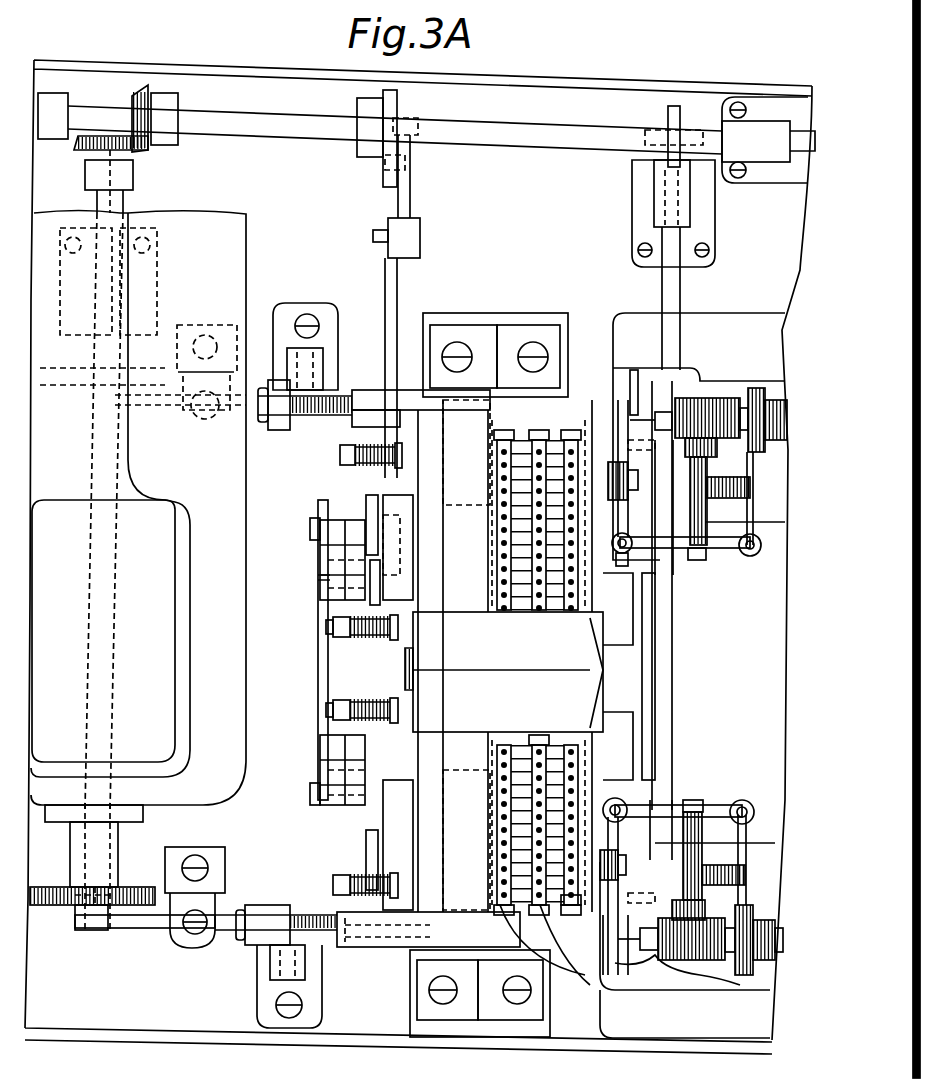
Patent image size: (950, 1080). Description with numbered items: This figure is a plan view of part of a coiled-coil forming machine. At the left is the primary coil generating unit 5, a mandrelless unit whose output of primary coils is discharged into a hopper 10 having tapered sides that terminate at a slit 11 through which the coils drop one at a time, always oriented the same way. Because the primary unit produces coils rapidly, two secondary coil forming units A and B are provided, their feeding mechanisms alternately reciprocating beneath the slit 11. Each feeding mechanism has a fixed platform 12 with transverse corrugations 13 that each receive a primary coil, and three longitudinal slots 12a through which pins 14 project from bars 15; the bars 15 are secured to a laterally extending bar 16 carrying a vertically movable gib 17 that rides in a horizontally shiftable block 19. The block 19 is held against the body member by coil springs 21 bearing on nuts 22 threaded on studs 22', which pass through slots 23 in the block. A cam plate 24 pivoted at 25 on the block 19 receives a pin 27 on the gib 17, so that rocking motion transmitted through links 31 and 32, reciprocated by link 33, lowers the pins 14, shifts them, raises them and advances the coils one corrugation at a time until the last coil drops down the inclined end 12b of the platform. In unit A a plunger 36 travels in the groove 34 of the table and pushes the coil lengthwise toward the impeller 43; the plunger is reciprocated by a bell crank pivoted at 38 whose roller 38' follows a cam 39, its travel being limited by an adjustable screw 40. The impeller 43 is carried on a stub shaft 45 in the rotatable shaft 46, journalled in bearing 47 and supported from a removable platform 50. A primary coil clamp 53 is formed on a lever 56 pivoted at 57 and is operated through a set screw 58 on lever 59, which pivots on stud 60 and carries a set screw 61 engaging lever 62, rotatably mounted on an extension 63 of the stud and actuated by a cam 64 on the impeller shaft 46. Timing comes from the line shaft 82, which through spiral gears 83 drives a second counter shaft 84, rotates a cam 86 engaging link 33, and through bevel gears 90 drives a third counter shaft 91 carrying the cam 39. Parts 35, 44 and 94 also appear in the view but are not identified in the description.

The primary coil generating unit 5 is at (138, 508).
The hopper 10 is at (560, 637).
The slit 11 is at (498, 656).
The platform 12 is at (548, 430).
The longitudinal slots 12a is at (532, 745).
The inclined end 12b is at (565, 902).
The transverse grooves or corrugations 13 is at (560, 590).
The pins 14 is at (505, 530).
The bars 15 is at (546, 948).
The laterally extending bar 16 is at (420, 500).
The gib 17 is at (400, 550).
The block 19 is at (400, 846).
The coil springs 21 is at (362, 698).
The nuts 22 is at (340, 748).
The studs 22' is at (296, 596).
The slots 23 is at (410, 440).
The cam plate 24 is at (320, 569).
The pivot 25 is at (322, 588).
The pin 27 is at (367, 666).
The link 31 is at (318, 630).
The link 32 is at (400, 296).
The link 33 is at (412, 214).
The groove 34 is at (530, 398).
The terminal block 35 is at (448, 398).
The plunger 36 is at (338, 396).
The pivot 38 is at (289, 986).
The cam follower or roller 38' is at (97, 866).
The cam 39 is at (37, 887).
The adjustable screw 40 is at (190, 934).
The impeller 43 is at (650, 412).
The rod 44 is at (625, 975).
The stub shaft 45 is at (648, 935).
The rotatable shaft 46 is at (672, 960).
The bearing 47 is at (728, 960).
The removable platform 50 is at (700, 985).
The primary coil clamp 53 is at (622, 395).
The lever 56 is at (624, 886).
The pivot 57 is at (625, 862).
The adjustable set screw 58 is at (637, 595).
The lever 59 is at (660, 808).
The stud 60 is at (702, 850).
The adjustable set screw 61 is at (748, 805).
The lever 62 is at (748, 845).
The extension 63 is at (715, 868).
The cam 64 is at (745, 975).
The line shaft 82 is at (591, 140).
The spiral gears 83 is at (668, 118).
The second counter shaft 84 is at (665, 282).
The cam 86 is at (372, 162).
The bevel gears 90 is at (148, 150).
The third counter shaft 91 is at (124, 206).
The arm 94 is at (684, 672).
The secondary coil forming unit A is at (687, 899).
The secondary coil forming unit B is at (699, 444).